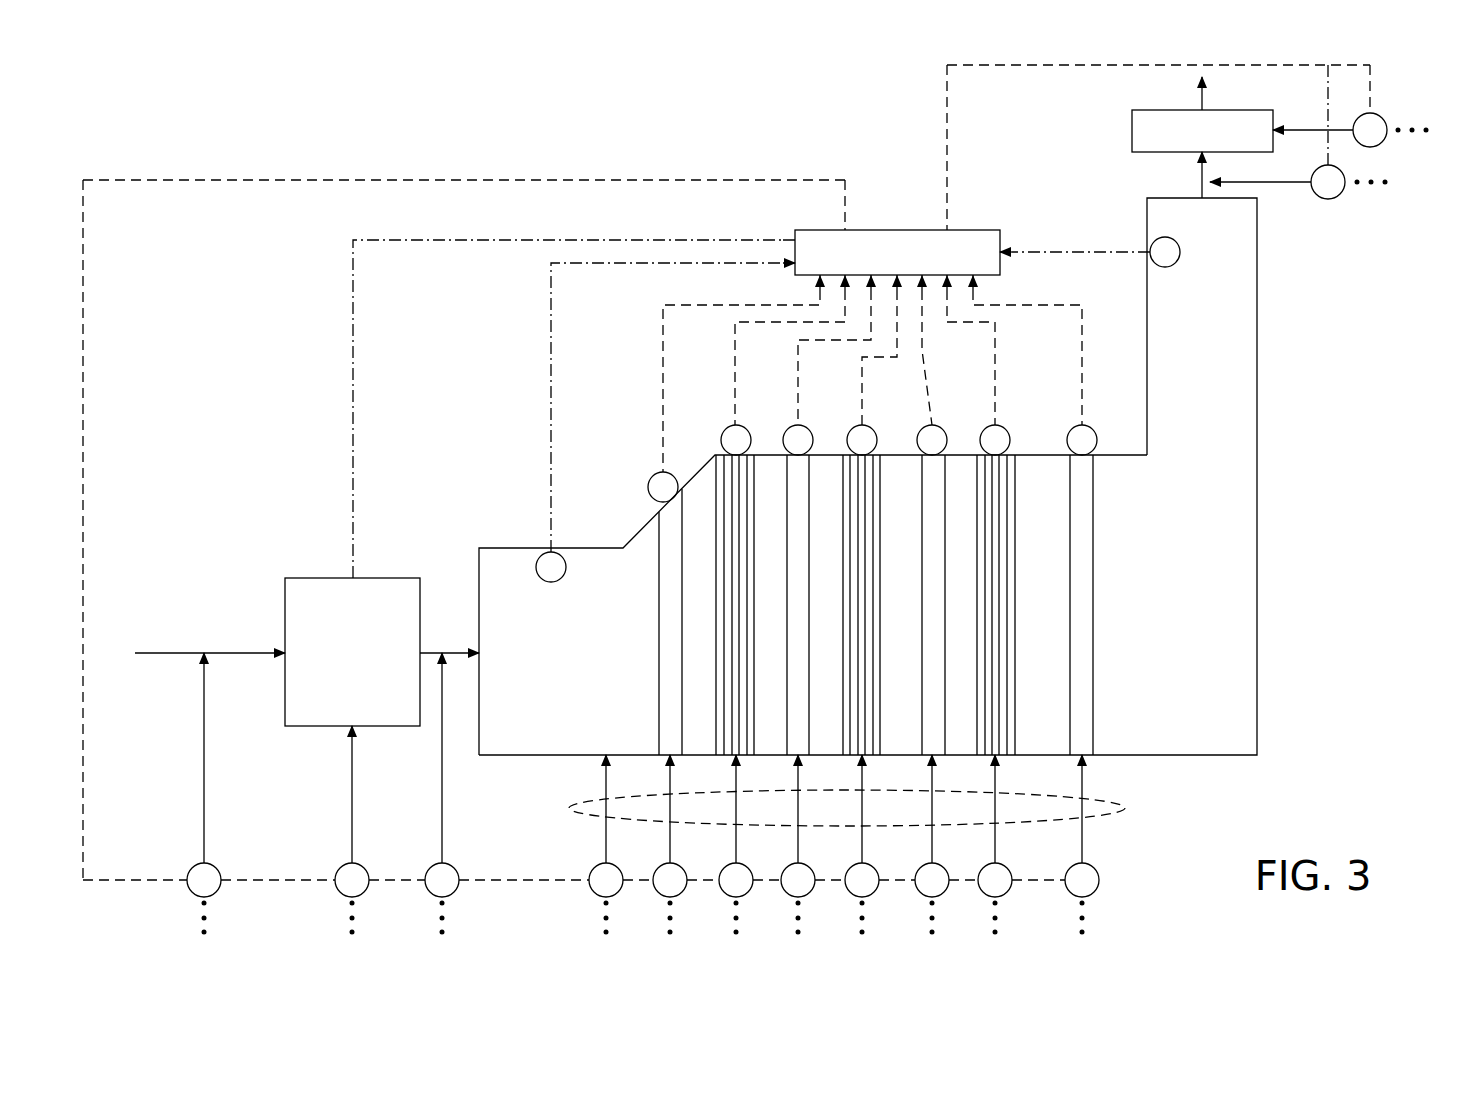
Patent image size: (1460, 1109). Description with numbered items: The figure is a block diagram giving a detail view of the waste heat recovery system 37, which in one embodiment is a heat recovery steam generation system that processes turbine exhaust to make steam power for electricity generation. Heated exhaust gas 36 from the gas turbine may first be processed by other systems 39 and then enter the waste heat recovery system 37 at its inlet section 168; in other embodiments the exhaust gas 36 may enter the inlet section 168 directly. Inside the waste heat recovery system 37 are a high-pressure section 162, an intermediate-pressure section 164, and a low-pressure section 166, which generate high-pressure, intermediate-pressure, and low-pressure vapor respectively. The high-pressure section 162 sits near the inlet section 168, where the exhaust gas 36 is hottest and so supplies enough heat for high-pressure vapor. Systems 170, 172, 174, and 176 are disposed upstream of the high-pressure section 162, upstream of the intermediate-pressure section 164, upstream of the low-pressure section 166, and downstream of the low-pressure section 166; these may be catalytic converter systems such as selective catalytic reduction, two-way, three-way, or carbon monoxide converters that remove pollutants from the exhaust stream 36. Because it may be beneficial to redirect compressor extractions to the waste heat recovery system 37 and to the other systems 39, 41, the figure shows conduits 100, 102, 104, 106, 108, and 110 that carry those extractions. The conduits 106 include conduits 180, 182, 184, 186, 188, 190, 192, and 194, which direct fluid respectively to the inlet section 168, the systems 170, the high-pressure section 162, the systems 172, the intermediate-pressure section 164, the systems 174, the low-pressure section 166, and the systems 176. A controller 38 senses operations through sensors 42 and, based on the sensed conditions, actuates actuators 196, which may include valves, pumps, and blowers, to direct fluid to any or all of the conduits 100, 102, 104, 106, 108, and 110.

The heated exhaust gas 36 is at (172, 653).
The waste heat recovery system 37 is at (1257, 480).
The controller 38 is at (895, 230).
The other systems 39 is at (336, 669).
The other systems 41 is at (1187, 145).
The sensors 42 is at (648, 487).
The conduit 100 is at (204, 765).
The conduit 102 is at (352, 802).
The conduit 104 is at (442, 815).
The conduits 106 is at (590, 803).
The conduit 108 is at (1290, 182).
The conduit 110 is at (1308, 130).
The high-pressure section 162 is at (717, 550).
The intermediate-pressure section 164 is at (843, 498).
The low-pressure section 166 is at (1015, 512).
The inlet section 168 is at (505, 580).
The systems 170 is at (659, 653).
The systems 172 is at (787, 670).
The systems 174 is at (945, 498).
The systems 176 is at (1093, 607).
The conduits 180 is at (606, 807).
The conduits 182 is at (670, 807).
The conduits 184 is at (736, 807).
The conduits 186 is at (798, 807).
The conduits 188 is at (862, 807).
The conduits 190 is at (932, 807).
The conduits 192 is at (995, 807).
The conduits 194 is at (1082, 807).
The actuators 196 is at (218, 893).